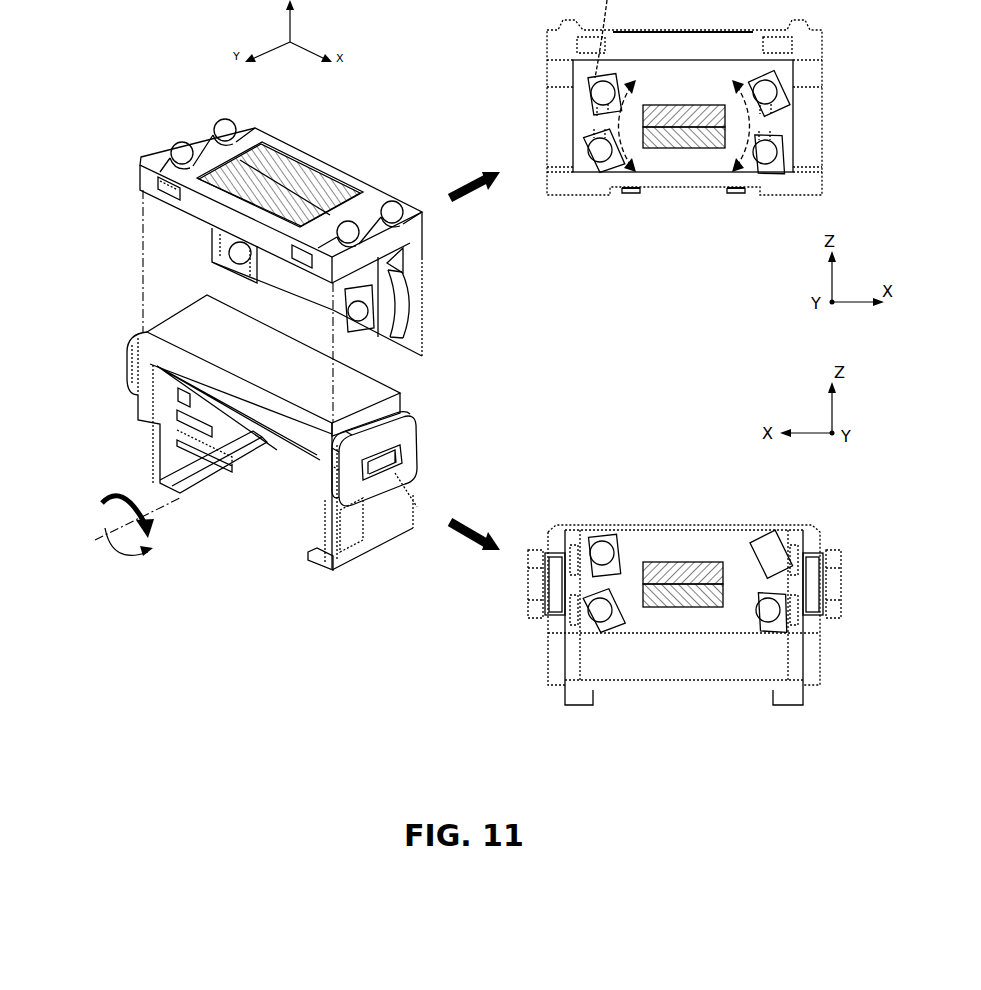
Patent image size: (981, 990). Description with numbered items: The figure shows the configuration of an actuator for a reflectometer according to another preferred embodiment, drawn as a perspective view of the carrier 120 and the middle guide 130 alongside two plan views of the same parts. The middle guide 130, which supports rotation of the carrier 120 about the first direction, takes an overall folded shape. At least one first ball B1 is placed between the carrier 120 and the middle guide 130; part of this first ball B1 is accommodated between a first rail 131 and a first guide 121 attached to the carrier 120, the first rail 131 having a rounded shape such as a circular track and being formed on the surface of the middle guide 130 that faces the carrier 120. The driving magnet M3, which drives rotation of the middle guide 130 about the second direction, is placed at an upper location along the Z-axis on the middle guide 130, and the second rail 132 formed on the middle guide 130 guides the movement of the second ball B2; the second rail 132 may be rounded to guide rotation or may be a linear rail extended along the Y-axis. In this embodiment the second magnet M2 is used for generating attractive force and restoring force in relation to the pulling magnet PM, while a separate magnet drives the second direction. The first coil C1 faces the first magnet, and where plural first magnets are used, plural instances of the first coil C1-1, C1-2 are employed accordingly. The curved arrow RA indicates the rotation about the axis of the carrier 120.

The middle guide 130 is at (151, 112).
The carrier 120 is at (258, 492).
The first guide 121 is at (598, 545).
The first rail 131 is at (583, 107).
The second rail 132 is at (368, 220).
The first ball B1 is at (608, 545).
The second ball B2 is at (224, 124).
The second magnet M2 is at (693, 149).
The driving magnet M3 is at (302, 168).
The pulling magnet PM is at (685, 565).
The first coil C1 is at (635, 540).
The first coil instance C1-1 is at (833, 613).
The first coil instance C1-2 is at (410, 428).
The rotation axis RA(Z1) RA is at (98, 526).